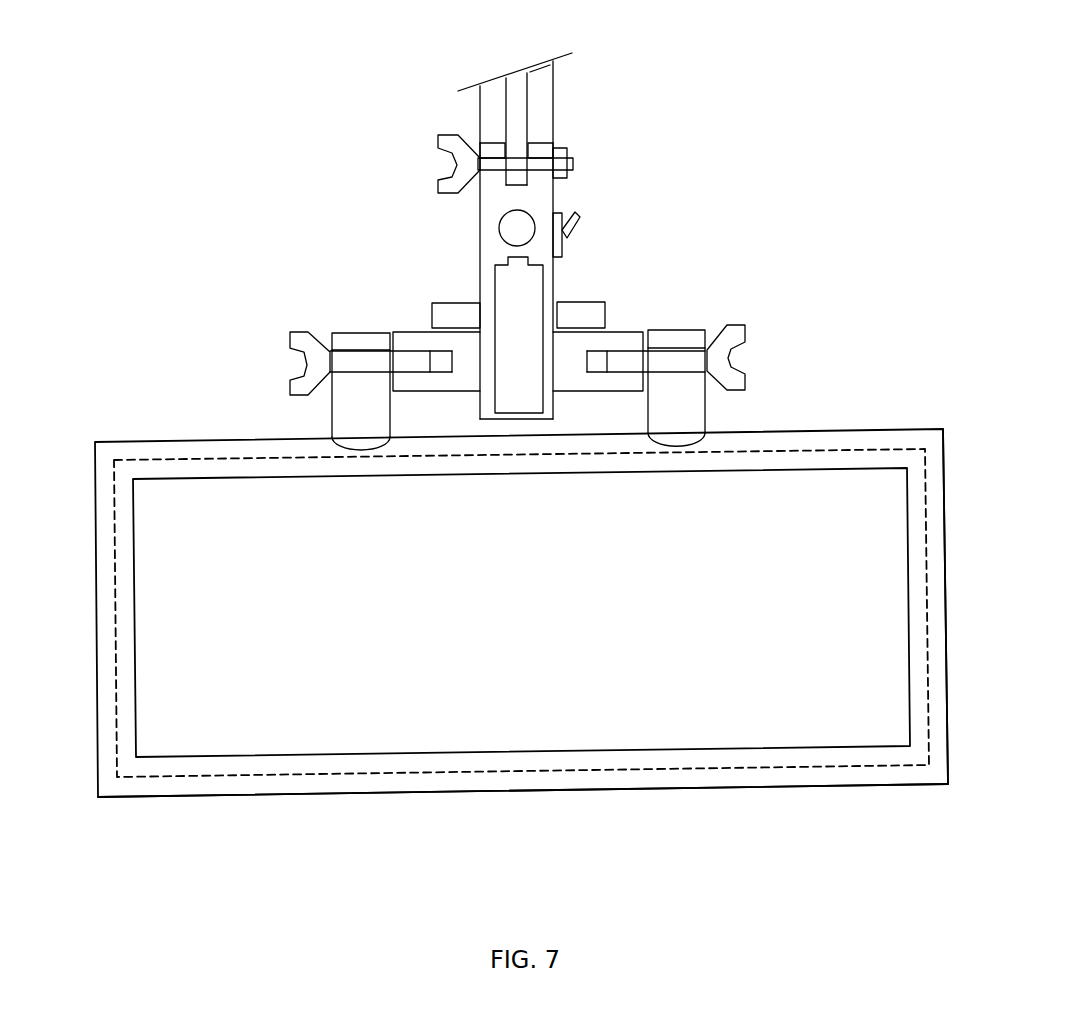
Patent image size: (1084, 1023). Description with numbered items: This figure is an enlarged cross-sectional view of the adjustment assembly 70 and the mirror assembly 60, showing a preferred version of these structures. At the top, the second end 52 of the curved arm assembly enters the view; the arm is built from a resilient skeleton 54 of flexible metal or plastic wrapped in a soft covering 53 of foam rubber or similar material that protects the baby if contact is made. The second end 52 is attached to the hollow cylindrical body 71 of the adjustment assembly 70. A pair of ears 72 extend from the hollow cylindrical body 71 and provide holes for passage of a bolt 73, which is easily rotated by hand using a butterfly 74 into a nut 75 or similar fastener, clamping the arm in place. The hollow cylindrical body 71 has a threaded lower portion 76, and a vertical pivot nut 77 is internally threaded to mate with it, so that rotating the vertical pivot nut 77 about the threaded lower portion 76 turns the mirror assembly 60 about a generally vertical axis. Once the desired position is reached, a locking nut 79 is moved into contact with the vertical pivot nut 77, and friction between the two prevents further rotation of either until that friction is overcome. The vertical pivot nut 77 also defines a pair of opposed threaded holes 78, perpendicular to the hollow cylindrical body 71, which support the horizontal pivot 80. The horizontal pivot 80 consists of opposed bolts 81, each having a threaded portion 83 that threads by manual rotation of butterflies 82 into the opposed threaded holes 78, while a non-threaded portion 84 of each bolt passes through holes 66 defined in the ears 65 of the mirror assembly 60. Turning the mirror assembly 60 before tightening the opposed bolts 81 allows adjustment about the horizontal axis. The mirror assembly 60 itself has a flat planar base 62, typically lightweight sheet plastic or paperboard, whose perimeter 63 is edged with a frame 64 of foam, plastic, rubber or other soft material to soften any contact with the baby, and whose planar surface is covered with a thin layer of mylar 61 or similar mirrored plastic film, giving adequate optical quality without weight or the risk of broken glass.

The second end of the curved arm assembly 52 is at (490, 120).
The soft covering 53 is at (543, 88).
The resilient skeleton 54 is at (514, 82).
The mirror assembly 60 is at (311, 812).
The mylar 61 is at (495, 650).
The flat planar base 62 is at (660, 665).
The perimeter 63 is at (833, 767).
The frame 64 is at (414, 783).
The ears 65 is at (697, 417).
The holes 66 is at (362, 375).
The adjustment assembly 70 is at (228, 245).
The hollow cylindrical body 71 is at (478, 237).
The ears 72 is at (542, 148).
The bolt 73 is at (545, 165).
The butterfly 74 is at (440, 137).
The nut 75 is at (567, 152).
The threaded lower portion 76 is at (557, 285).
The vertical pivot nut 77 is at (412, 338).
The opposed threaded holes 78 is at (442, 375).
The locking nut 79 is at (597, 312).
The horizontal pivot 80 is at (228, 346).
The opposed bolts 81 is at (607, 362).
The butterflies 82 is at (297, 390).
The threaded portion 83 is at (628, 358).
The non-threaded portion 84 is at (357, 360).